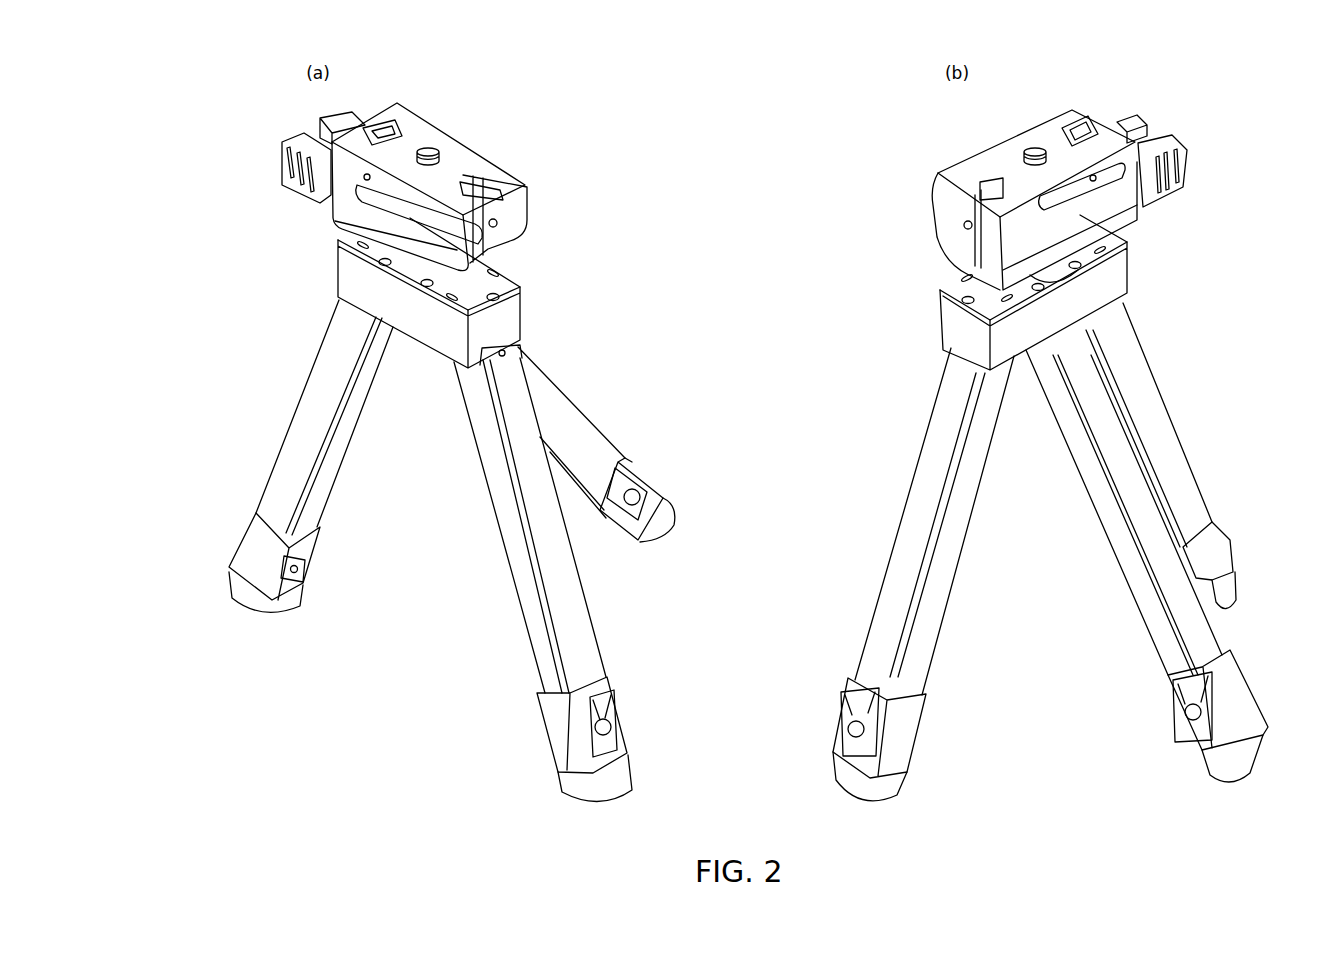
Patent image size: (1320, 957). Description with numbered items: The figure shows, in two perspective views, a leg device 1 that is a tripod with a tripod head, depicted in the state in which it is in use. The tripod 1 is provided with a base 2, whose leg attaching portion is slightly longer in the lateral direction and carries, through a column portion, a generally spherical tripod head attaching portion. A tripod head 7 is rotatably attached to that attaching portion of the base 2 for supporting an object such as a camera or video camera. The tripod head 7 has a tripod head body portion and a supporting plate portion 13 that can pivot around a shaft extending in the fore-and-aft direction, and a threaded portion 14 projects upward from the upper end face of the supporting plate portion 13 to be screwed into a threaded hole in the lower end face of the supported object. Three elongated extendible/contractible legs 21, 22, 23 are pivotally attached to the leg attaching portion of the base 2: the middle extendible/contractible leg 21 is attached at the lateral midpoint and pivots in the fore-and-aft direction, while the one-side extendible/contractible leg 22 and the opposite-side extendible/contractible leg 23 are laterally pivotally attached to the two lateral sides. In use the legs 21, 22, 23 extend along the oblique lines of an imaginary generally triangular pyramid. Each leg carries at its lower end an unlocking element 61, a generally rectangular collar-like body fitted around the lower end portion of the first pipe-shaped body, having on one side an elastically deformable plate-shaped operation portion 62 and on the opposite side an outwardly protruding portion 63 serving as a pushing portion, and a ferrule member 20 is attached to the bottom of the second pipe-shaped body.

The leg device 1 is at (500, 132).
The tripod head 7 is at (542, 180).
The supporting plate portion 13 is at (408, 125).
The threaded portion 14 is at (433, 147).
The base 2 is at (537, 292).
The middle extendible/contractible leg 21 is at (608, 418).
The one-side extendible/contractible leg 22 is at (607, 635).
The opposite-side extendible/contractible leg 23 is at (342, 488).
The unlocking element 61 is at (247, 543).
The operation portion 62 is at (640, 494).
The protruding portion 63 is at (307, 564).
The ferrule member 20 is at (238, 593).